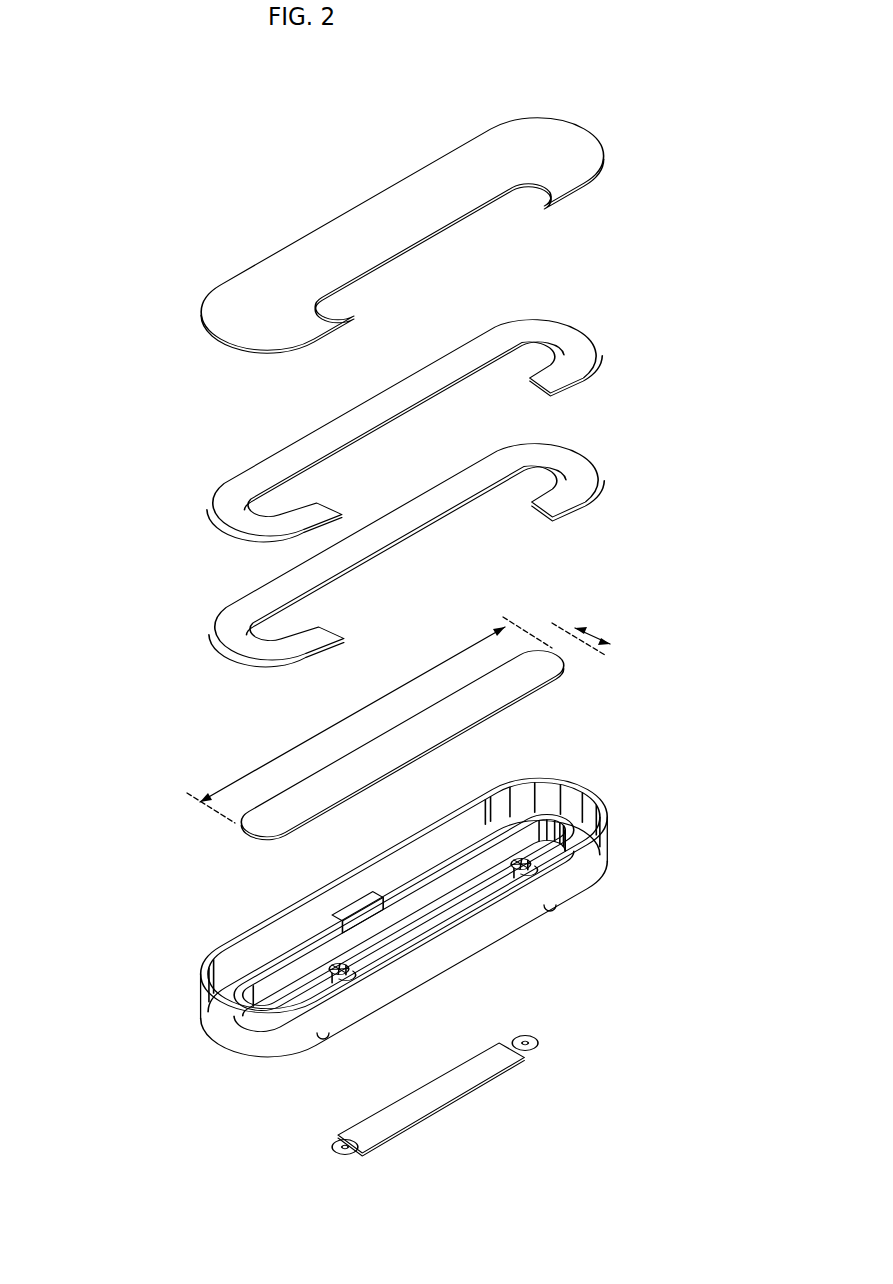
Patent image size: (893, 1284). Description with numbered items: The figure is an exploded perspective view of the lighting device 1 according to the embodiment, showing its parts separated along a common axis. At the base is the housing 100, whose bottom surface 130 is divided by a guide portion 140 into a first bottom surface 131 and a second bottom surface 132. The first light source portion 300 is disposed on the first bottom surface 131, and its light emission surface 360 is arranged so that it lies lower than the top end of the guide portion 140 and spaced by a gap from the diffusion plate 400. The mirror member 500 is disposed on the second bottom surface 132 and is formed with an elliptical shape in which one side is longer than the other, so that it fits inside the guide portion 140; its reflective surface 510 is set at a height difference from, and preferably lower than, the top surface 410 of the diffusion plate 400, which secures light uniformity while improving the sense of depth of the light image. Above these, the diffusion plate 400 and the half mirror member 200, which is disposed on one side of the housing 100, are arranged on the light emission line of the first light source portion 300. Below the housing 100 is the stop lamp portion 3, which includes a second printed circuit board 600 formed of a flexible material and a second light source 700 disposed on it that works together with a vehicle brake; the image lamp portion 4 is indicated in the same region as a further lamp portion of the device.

The lighting device 1 is at (72, 113).
The housing 100 is at (355, 925).
The bottom surface 130 is at (355, 925).
The first bottom surface 131 is at (228, 997).
The second bottom surface 132 is at (237, 1013).
The guide portion 140 is at (287, 957).
The half mirror member 200 is at (172, 281).
The first light source portion 300 is at (355, 540).
The light emission surface 360 is at (578, 467).
The diffusion plate 400 is at (355, 414).
The top surface 410 is at (575, 340).
The mirror member 500 is at (333, 747).
The reflective surface 510 is at (508, 684).
The second printed circuit board 600 is at (357, 1153).
The second light source 700 is at (332, 1137).
The stop lamp portion 3 is at (382, 1105).
The image lamp portion 4 is at (382, 1105).